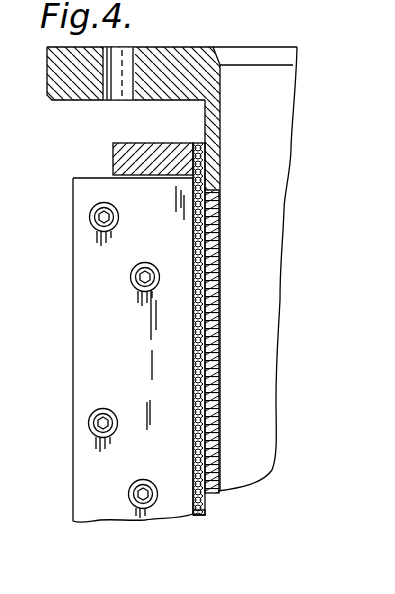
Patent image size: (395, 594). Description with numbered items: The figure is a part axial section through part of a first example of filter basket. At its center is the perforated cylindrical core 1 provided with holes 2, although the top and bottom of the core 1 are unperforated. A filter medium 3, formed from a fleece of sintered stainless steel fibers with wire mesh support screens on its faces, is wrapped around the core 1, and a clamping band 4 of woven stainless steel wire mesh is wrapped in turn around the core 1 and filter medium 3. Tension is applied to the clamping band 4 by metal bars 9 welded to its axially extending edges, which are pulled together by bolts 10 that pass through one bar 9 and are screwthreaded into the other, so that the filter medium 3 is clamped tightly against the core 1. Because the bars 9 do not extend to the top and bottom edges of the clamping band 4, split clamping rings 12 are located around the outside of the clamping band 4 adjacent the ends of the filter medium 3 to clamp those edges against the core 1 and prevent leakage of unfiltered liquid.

The perforated cylindrical core 1 is at (220, 160).
The holes 2 is at (220, 265).
The filter medium 3 is at (214, 133).
The clamping band 4 is at (207, 516).
The metal bars 9 is at (88, 248).
The bolts 10 is at (132, 283).
The split clamping rings 12 is at (128, 153).